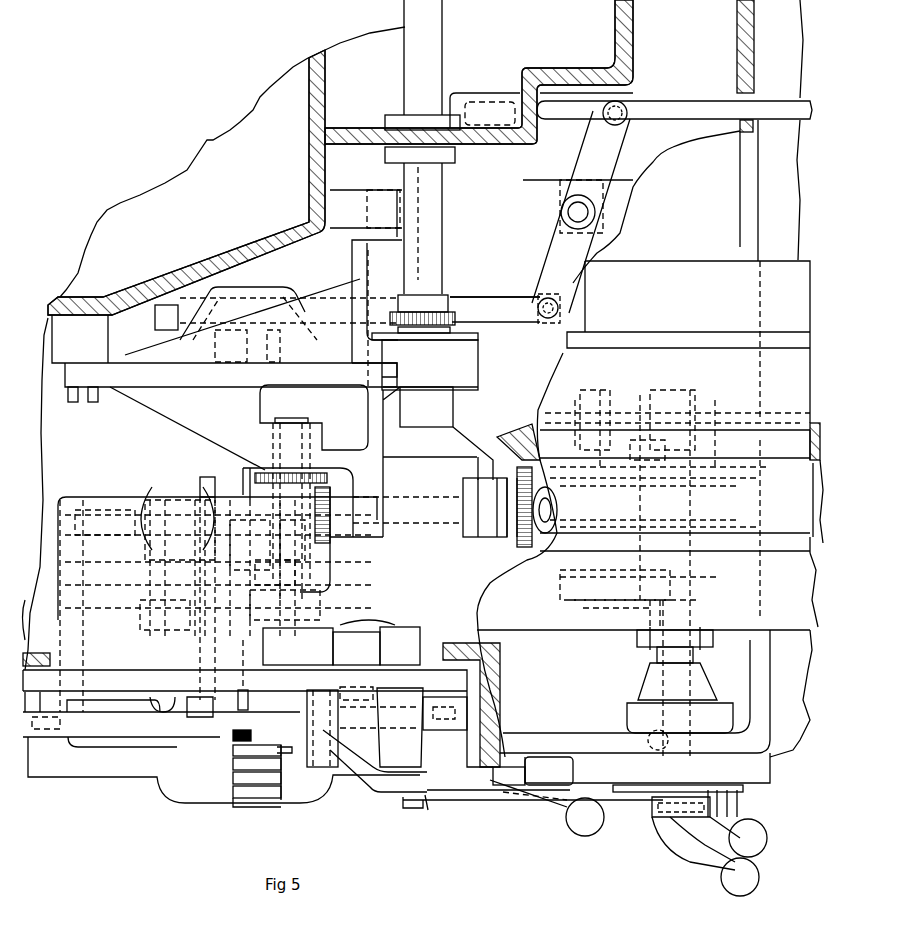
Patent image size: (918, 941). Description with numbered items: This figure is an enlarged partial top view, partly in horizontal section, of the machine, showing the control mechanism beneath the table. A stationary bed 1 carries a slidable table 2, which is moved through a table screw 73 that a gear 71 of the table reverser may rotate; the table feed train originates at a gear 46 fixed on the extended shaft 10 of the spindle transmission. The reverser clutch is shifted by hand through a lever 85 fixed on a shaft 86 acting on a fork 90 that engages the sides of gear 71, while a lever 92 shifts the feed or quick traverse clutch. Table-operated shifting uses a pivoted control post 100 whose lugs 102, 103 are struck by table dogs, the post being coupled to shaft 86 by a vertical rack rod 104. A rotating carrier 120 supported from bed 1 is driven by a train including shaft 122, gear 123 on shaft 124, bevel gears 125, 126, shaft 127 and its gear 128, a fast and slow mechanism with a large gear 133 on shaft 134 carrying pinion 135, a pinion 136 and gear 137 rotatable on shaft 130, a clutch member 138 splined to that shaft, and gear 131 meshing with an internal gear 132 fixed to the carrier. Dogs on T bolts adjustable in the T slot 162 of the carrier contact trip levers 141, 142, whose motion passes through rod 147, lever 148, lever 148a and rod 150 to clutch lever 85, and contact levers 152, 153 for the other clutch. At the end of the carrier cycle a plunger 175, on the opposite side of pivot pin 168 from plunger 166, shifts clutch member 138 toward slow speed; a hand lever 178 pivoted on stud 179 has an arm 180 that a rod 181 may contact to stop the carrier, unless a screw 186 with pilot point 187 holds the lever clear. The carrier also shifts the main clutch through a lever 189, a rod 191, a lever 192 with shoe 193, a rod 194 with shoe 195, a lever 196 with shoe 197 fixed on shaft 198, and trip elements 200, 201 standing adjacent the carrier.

The bed 1 is at (316, 150).
The table 2 is at (708, 266).
The shaft 10 is at (434, 52).
The gear 46 is at (458, 317).
The gear 71 is at (646, 412).
The table screw 73 is at (535, 428).
The lever 85 is at (767, 836).
The shaft 86 is at (690, 732).
The fork 90 is at (610, 617).
The lever 92 is at (697, 858).
The control post 100 is at (658, 660).
The lug portion 102 is at (713, 641).
The lug portion 103 is at (655, 642).
The vertical rod 104 is at (650, 740).
The carrier 120 is at (62, 738).
The shaft 122 is at (563, 566).
The gear 123 is at (518, 548).
The shaft 124 is at (436, 524).
The bevel gear 125 is at (330, 543).
The bevel gear 126 is at (258, 478).
The shaft 127 is at (305, 590).
The gear 128 is at (306, 630).
The shaft 130 is at (152, 500).
The gear 131 is at (161, 716).
The internal gear 132 is at (80, 712).
The large gear 133 is at (380, 625).
The shaft 134 is at (278, 574).
The pinion 135 is at (292, 532).
The pinion 136 is at (148, 623).
The gear 137 is at (82, 540).
The clutch member 138 is at (200, 500).
The trip lever 141 is at (282, 752).
The trip lever 142 is at (238, 750).
The pivoted rod 147 is at (350, 630).
The lever 148 is at (416, 628).
The lever 148a is at (430, 800).
The pivoted rod 150 is at (488, 801).
The trip lever 152 is at (282, 778).
The trip lever 153 is at (238, 764).
The T slot 162 is at (449, 722).
The plunger 166 is at (242, 642).
The pivot pin 168 is at (39, 620).
The plunger 175 is at (84, 648).
The hand lever 178 is at (572, 830).
The stud 179 is at (335, 760).
The arm 180 is at (197, 716).
The rod 181 is at (206, 476).
The screw 186 is at (233, 736).
The pilot point 187 is at (240, 690).
The lever 189 is at (558, 199).
The rod 191 is at (680, 103).
The pivoted lever 192 is at (548, 257).
The pivoted shoe 193 is at (620, 101).
The rod 194 is at (496, 323).
The pivoted shoe 195 is at (548, 320).
The lever 196 is at (276, 345).
The pivoted shoe 197 is at (235, 330).
The shaft 198 is at (271, 397).
The trip element 200 is at (286, 790).
The trip element 201 is at (240, 798).